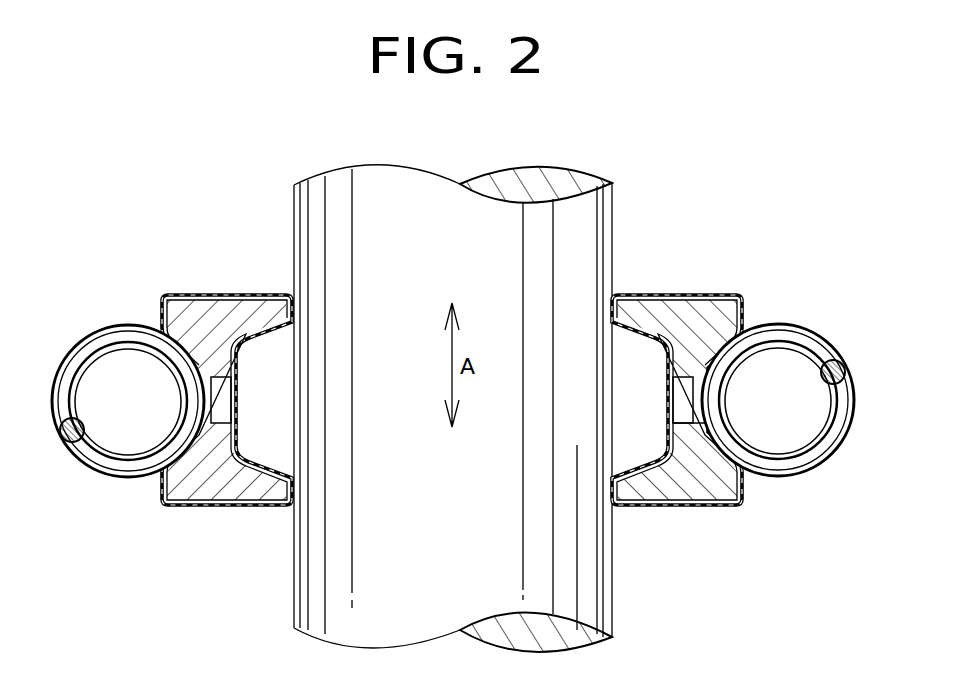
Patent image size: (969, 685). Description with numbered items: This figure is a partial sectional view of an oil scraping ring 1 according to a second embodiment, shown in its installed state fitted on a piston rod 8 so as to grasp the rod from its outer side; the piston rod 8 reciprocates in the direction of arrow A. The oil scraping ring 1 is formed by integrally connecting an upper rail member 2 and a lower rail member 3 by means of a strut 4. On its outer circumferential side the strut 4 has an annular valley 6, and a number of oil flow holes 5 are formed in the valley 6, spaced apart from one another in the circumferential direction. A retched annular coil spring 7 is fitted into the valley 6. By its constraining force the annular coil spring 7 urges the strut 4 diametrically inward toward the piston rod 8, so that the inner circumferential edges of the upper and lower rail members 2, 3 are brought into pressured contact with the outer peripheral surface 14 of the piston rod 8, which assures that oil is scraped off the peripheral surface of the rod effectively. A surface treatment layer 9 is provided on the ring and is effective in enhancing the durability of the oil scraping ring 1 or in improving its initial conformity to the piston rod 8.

The oil scraping ring 1 is at (721, 366).
The upper rail member 2 is at (628, 297).
The lower rail member 3 is at (637, 487).
The strut 4 is at (680, 430).
The oil flow holes 5 is at (680, 403).
The annular valley 6 is at (701, 377).
The annular coil spring 7 is at (828, 440).
The piston rod 8 is at (423, 222).
The surface treatment layer 9 is at (697, 297).
The outer peripheral surface 14 is at (293, 237).